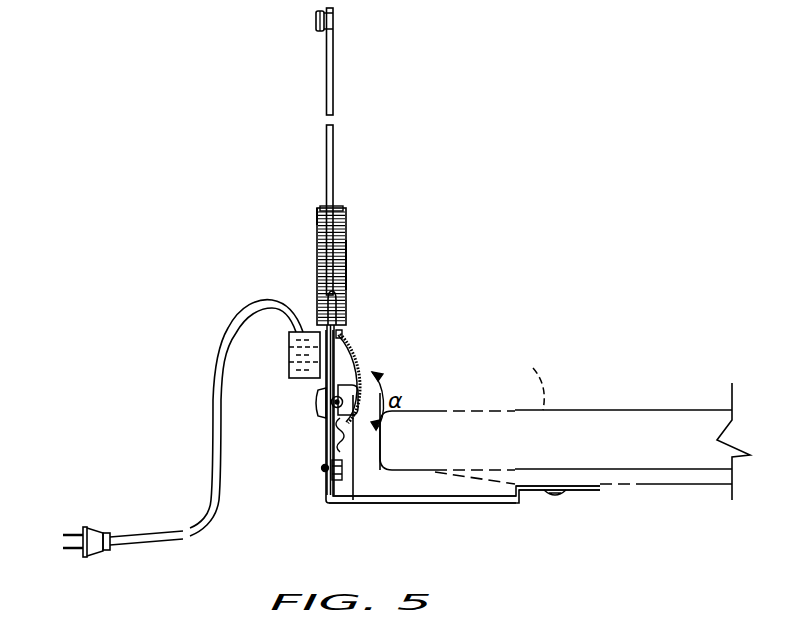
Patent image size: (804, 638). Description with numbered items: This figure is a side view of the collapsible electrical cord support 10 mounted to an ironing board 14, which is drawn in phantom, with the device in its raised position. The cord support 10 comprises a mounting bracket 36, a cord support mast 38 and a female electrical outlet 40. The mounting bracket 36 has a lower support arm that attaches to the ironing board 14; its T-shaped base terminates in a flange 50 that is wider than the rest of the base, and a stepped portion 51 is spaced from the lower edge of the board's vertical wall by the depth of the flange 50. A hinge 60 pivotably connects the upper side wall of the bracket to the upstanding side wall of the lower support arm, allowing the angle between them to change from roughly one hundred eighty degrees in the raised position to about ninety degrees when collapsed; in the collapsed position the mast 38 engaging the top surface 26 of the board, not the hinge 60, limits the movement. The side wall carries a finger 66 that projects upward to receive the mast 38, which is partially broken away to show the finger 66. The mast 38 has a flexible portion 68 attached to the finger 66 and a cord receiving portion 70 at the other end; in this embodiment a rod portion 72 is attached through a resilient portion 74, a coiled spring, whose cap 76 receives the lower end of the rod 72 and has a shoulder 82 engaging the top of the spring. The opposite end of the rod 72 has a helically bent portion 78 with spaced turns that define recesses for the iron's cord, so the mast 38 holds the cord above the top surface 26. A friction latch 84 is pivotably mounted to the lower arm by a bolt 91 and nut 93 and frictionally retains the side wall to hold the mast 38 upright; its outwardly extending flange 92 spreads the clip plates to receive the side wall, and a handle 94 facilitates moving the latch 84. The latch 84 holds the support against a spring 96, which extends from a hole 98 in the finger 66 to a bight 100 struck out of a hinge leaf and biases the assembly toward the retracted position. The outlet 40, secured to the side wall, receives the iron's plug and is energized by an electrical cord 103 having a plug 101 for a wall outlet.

The collapsible electrical cord support 10 is at (323, 508).
The ironing board 14 is at (580, 447).
The top surface 26 is at (545, 366).
The mounting bracket 36 is at (458, 505).
The cord support mast 38 is at (334, 80).
The female electrical outlet 40 is at (290, 365).
The flange 50 is at (590, 491).
The stepped portion 51 is at (487, 503).
The hinge 60 is at (332, 415).
The finger 66 is at (340, 305).
The flexible portion 68 is at (346, 225).
The cord receiving portion 70 is at (336, 22).
The rod portion 72 is at (334, 140).
The resilient portion 74 is at (347, 260).
The cap 76 is at (320, 210).
The helically bent portion 78 is at (314, 22).
The shoulder 82 is at (346, 209).
The friction latch 84 is at (304, 430).
The bolt 91 is at (325, 470).
The outwardly extending flange 92 is at (320, 407).
The nut 93 is at (350, 482).
The handle 94 is at (366, 472).
The spring 96 is at (352, 352).
The hole 98 is at (340, 333).
The bight 100 is at (327, 443).
The plug 101 is at (95, 530).
The electrical cord 103 is at (212, 480).